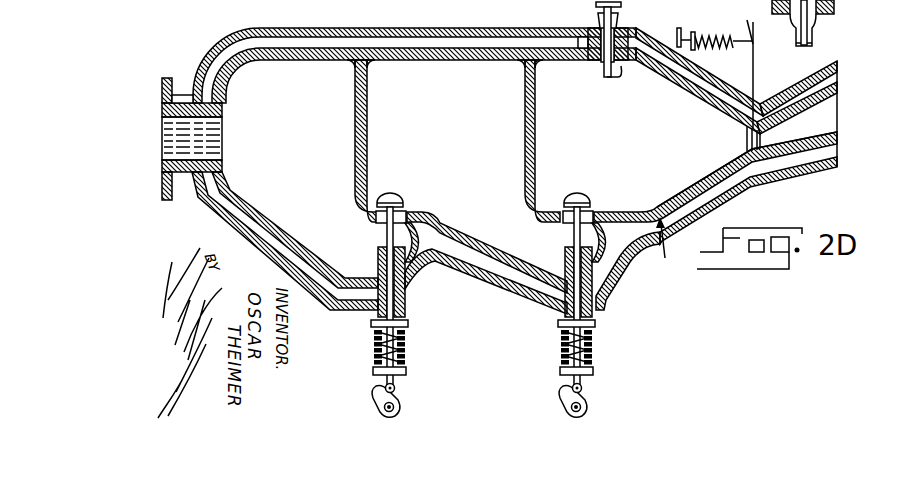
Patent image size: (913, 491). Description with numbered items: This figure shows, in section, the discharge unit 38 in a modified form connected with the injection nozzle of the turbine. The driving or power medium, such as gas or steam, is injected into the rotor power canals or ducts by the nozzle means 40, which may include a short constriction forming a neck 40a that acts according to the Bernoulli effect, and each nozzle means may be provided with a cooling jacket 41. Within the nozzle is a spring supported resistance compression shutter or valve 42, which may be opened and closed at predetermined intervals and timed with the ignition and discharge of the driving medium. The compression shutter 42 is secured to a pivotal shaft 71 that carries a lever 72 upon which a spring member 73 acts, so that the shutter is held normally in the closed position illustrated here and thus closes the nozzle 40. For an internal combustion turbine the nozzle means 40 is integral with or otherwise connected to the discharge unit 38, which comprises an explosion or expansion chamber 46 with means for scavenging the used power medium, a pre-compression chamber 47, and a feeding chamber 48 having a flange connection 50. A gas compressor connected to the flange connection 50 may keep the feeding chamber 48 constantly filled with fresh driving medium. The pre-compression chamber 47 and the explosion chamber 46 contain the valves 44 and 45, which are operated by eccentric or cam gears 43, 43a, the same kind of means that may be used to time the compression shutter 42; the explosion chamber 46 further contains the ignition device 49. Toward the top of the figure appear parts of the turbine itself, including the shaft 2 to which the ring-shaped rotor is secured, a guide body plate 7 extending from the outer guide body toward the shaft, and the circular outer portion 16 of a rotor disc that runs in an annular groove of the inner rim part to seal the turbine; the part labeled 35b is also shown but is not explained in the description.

The feeding chamber 48 is at (292, 150).
The pre-compression chamber 47 is at (455, 129).
The explosion or expansion chamber 46 is at (625, 125).
The flange connection 50 is at (168, 176).
The valve 44 is at (404, 178).
The valve 45 is at (580, 194).
The eccentric or cam gear 43 is at (397, 399).
The eccentric or cam gear 43a is at (584, 399).
The ignition device 49 is at (597, 27).
The spring member 73 is at (692, 30).
The lever 72 is at (758, 27).
The pivotal shaft 71 is at (755, 75).
The resistance compression shutter or valve 42 is at (745, 141).
The nozzle means 40 is at (838, 134).
The neck 40a is at (764, 153).
The cooling jacket 41 is at (817, 162).
The discharge unit 38 is at (667, 249).
The shaft 2 is at (815, 38).
The valve body 35b is at (838, 7).
The outer portion of disc 16 is at (380, 3).
The guide body plate 7 is at (459, 0).